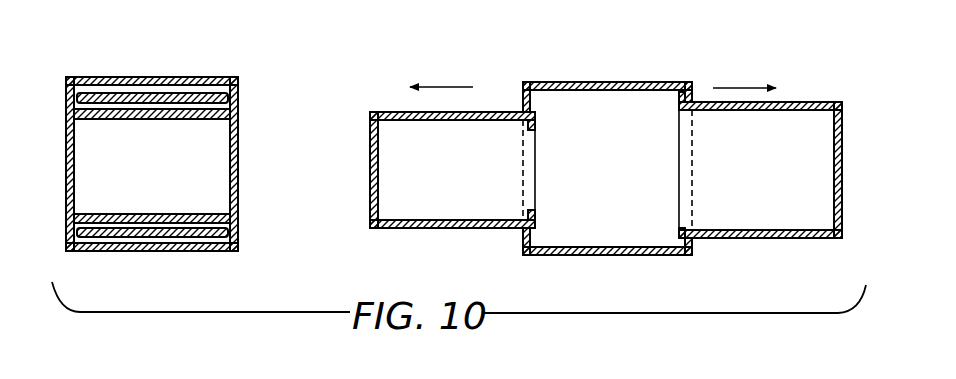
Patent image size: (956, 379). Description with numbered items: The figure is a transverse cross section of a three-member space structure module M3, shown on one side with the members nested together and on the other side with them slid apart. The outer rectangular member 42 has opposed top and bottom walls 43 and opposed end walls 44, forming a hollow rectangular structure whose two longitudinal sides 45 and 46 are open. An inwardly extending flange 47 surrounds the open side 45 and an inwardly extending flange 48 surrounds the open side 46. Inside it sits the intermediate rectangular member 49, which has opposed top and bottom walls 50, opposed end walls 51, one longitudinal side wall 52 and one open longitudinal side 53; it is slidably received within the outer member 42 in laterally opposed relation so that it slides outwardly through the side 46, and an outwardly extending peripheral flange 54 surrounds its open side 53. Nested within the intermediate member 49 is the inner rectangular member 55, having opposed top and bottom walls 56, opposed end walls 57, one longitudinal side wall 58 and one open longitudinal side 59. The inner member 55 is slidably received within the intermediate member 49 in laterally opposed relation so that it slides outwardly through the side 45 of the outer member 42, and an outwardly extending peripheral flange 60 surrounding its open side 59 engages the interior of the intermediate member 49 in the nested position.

The outer rectangular member 42 is at (160, 77).
The top and bottom walls 43 is at (170, 77).
The end walls 44 is at (607, 168).
The open longitudinal side 45 is at (68, 230).
The open longitudinal side 46 is at (238, 248).
The inwardly extending flange 47 is at (72, 95).
The inwardly extending flange 48 is at (240, 80).
The intermediate rectangular member 49 is at (242, 130).
The top and bottom walls 50 is at (186, 93).
The end walls 51 is at (760, 170).
The longitudinal side wall 52 is at (242, 185).
The open longitudinal side 53 is at (70, 118).
The outwardly extending peripheral flange 54 is at (80, 251).
The inner rectangular member 55 is at (80, 165).
The top and bottom walls 56 is at (172, 119).
The end walls 57 is at (304, 170).
The longitudinal side wall 58 is at (68, 175).
The open longitudinal side 59 is at (222, 215).
The outwardly extending peripheral flange 60 is at (235, 113).
The three-member module M3 is at (227, 47).